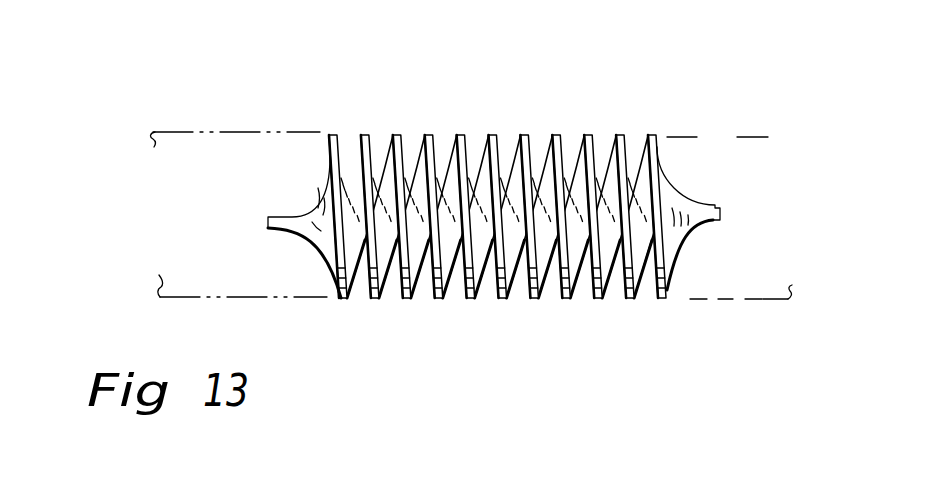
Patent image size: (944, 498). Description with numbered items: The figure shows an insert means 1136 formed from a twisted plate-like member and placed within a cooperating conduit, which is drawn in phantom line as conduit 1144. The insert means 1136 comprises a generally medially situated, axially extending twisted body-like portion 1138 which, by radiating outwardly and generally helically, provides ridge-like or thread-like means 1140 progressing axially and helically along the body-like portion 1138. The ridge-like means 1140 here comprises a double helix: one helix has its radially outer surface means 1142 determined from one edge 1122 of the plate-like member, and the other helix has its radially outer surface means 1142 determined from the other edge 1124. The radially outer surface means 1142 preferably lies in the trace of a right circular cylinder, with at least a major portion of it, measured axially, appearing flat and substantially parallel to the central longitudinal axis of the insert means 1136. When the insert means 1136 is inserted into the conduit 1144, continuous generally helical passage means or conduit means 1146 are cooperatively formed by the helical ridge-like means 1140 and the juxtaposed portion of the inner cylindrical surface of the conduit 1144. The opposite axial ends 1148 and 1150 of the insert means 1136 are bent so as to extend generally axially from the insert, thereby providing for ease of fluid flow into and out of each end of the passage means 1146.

The edge 1122 is at (536, 292).
The edge 1124 is at (553, 133).
The insert means 1136 is at (300, 262).
The body-like portion 1138 is at (451, 222).
The ridge-like means 1140 is at (667, 147).
The radially outer surface means 1142 is at (633, 298).
The phantom line conduit 1144 is at (178, 180).
The helical passage means 1146 is at (653, 292).
The axial end 1148 is at (308, 208).
The axial end 1150 is at (697, 200).